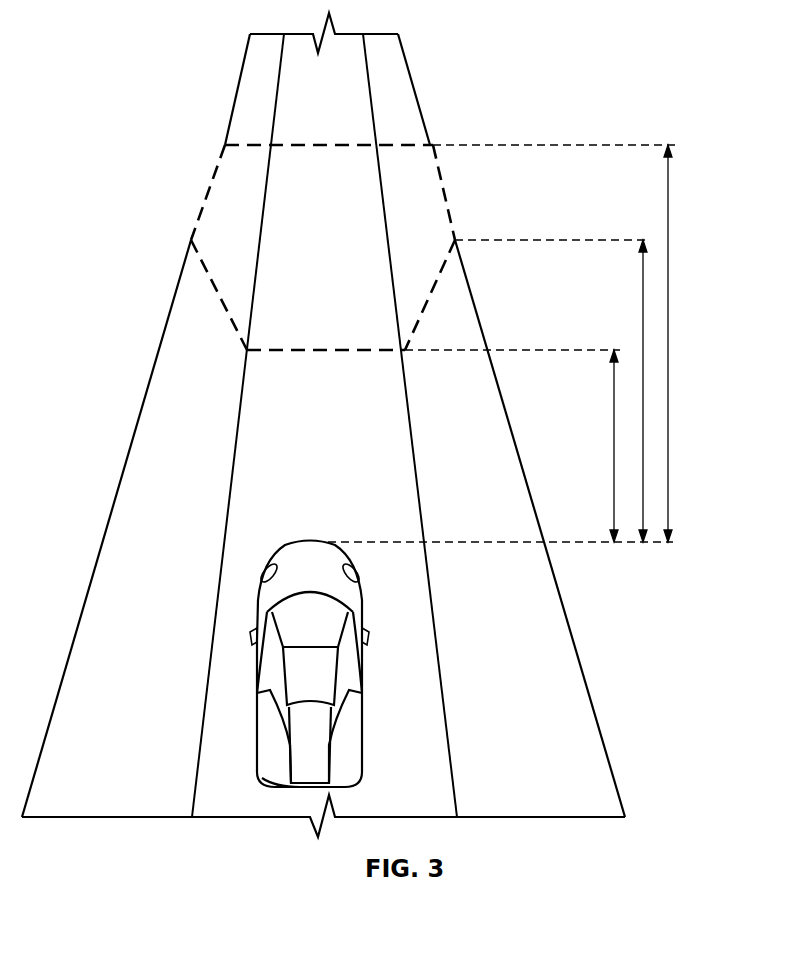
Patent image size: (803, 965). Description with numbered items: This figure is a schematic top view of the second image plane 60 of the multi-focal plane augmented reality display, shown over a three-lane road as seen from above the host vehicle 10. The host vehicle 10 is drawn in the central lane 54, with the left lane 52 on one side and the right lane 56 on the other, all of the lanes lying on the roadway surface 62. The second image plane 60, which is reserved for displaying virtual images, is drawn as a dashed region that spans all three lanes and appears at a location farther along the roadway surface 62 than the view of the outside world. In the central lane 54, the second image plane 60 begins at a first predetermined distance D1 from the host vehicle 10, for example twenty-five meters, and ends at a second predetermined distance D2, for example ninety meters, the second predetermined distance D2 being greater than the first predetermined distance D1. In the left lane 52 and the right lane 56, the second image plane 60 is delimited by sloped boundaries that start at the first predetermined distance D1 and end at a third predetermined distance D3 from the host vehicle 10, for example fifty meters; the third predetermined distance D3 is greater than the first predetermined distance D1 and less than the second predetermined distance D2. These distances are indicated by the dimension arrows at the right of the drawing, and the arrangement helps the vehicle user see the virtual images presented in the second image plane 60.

The host vehicle 10 is at (288, 585).
The left lane 52 is at (153, 445).
The central lane 54 is at (388, 500).
The right lane 56 is at (488, 423).
The second image plane 60 is at (240, 143).
The roadway surface 62 is at (292, 407).
The first predetermined distance D1 is at (614, 448).
The second predetermined distance D2 is at (668, 257).
The third predetermined distance D3 is at (643, 373).